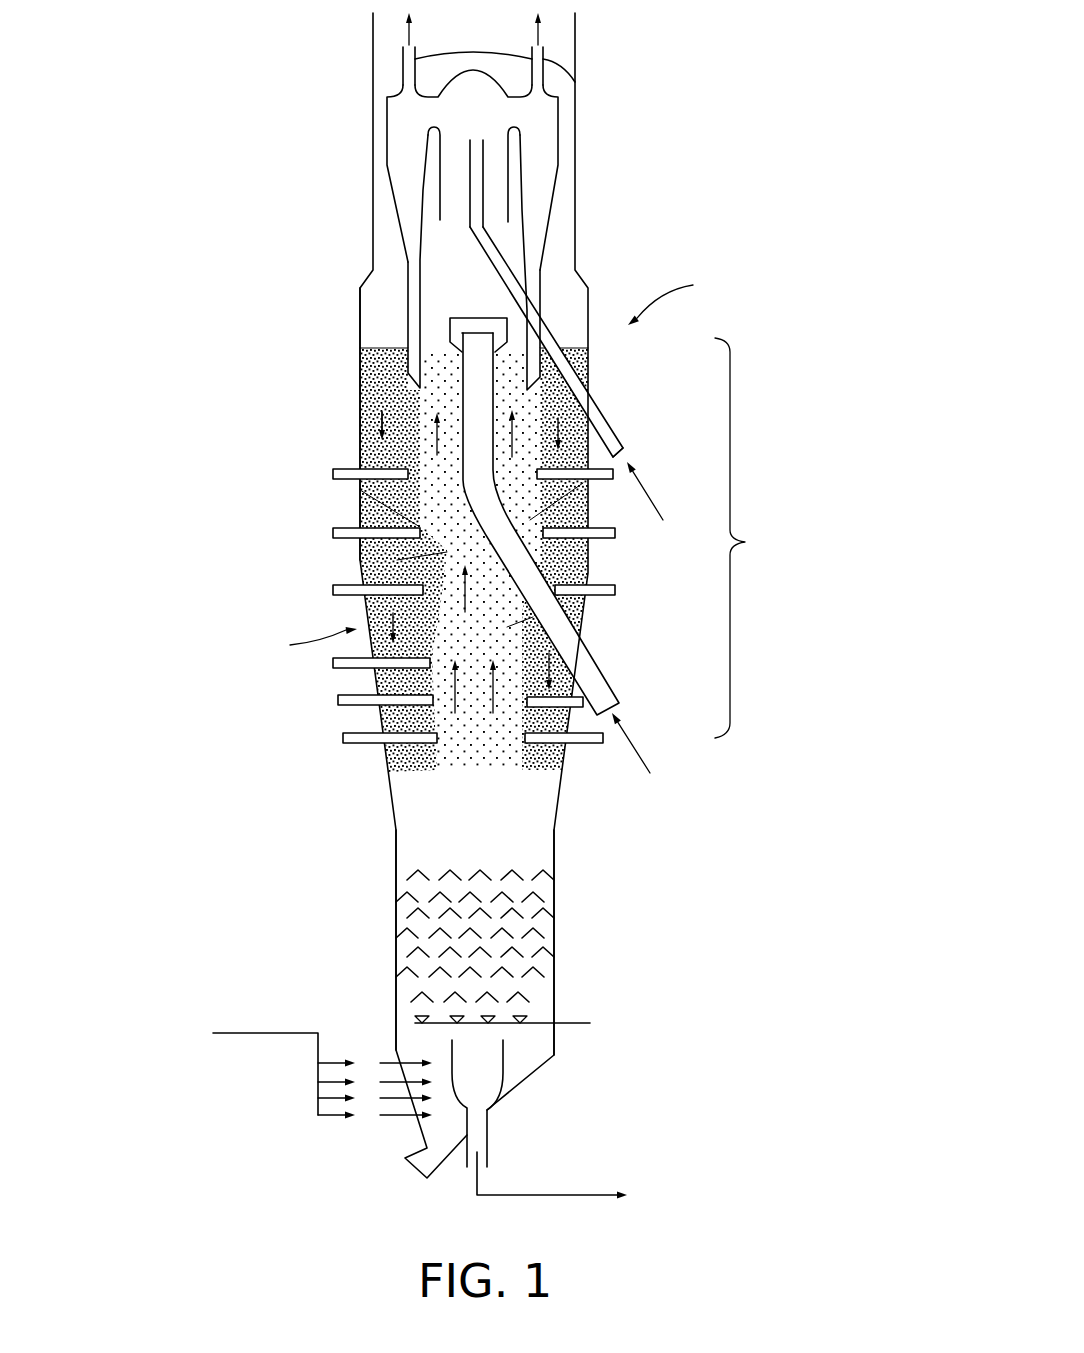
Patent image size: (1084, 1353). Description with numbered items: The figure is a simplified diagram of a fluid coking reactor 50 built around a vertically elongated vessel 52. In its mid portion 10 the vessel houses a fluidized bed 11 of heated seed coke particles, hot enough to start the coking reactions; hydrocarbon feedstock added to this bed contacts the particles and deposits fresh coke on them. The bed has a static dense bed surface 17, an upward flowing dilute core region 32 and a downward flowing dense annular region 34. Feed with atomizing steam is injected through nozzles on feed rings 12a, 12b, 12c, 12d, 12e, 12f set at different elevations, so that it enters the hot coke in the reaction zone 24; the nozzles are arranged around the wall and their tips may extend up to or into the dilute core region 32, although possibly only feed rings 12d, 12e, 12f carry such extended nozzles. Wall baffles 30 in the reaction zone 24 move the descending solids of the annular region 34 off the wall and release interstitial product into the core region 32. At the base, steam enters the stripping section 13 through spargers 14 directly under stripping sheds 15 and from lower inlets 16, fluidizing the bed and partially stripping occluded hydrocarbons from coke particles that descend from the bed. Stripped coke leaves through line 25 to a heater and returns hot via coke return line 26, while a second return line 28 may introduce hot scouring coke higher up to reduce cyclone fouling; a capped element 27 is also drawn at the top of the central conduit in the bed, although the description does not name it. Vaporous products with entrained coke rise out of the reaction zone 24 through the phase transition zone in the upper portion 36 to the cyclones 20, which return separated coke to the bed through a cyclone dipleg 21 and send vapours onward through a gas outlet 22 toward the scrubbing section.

The mid portion 10 is at (418, 595).
The fluidized bed 11 is at (360, 588).
The feed ring 12a is at (335, 469).
The feed ring 12b is at (335, 530).
The feed ring 12c is at (340, 595).
The feed ring 12d is at (340, 668).
The feed ring 12e is at (345, 705).
The feed ring 12f is at (352, 745).
The stripping section 13 is at (397, 920).
The spargers 14 is at (530, 1015).
The stripping sheds 15 is at (540, 935).
The lower inlets 16 is at (385, 1057).
The dense bed surface 17 is at (360, 368).
The cyclones 20 is at (387, 163).
The cyclone dipleg 21 is at (407, 350).
The gas outlet 22 is at (403, 59).
The reaction zone 24 is at (750, 538).
The line 25 is at (490, 1138).
The coke return line 26 is at (603, 667).
The distributor cap 27 is at (445, 328).
The second return line 28 is at (610, 417).
The wall baffles 30 is at (598, 510).
The dilute core region 32 is at (447, 550).
The dense annular region 34 is at (360, 450).
The upper portion 36 is at (575, 243).
The fluid coking reactor 50 is at (674, 292).
The vertically elongated vessel 52 is at (588, 338).